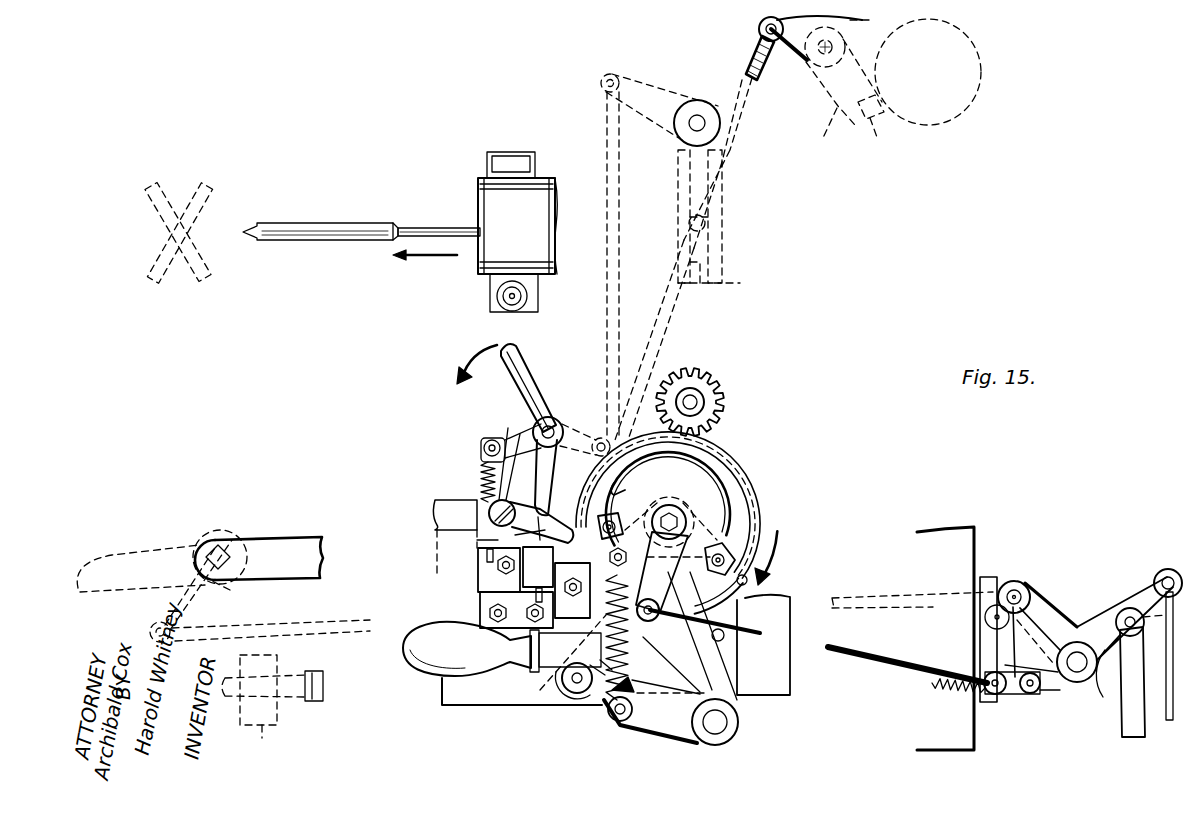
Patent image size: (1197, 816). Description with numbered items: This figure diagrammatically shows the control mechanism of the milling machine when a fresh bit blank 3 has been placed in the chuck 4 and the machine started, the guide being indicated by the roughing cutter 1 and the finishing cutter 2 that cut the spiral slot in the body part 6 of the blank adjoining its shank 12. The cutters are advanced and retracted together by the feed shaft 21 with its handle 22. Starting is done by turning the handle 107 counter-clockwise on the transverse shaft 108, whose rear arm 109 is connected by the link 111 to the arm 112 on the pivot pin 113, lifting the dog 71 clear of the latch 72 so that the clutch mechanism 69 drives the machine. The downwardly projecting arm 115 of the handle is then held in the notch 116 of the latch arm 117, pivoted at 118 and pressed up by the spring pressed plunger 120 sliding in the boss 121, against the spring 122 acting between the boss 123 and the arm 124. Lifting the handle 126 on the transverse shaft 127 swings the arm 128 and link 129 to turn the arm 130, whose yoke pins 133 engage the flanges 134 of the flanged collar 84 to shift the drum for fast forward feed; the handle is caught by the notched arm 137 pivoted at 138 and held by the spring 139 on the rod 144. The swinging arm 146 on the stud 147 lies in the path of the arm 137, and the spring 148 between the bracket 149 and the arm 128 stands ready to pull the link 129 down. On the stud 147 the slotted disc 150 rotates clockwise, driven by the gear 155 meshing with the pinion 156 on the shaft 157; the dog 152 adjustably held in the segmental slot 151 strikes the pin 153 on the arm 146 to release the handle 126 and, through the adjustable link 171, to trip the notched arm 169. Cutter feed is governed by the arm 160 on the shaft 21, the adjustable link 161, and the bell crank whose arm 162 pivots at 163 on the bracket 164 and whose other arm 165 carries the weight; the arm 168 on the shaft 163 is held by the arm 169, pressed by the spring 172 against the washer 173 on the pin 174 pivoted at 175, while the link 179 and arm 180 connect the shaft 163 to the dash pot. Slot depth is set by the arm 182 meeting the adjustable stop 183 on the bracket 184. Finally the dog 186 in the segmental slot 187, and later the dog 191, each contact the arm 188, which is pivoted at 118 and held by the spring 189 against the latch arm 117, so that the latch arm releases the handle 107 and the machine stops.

The roughing cutter 1 is at (207, 187).
The finishing cutter 2 is at (178, 219).
The bit blank 3 is at (318, 217).
The chuck 4 is at (517, 232).
The body part 6 is at (376, 222).
The shank part 12 is at (434, 225).
The feed shaft 21 is at (229, 554).
The handle 22 is at (311, 540).
The clutch mechanism 69 is at (971, 104).
The dog 71 is at (842, 126).
The latch 72 is at (882, 128).
The flanged collar 84 is at (697, 286).
The handle 107 is at (526, 381).
The transverse shaft 108 is at (554, 424).
The arm 109 is at (584, 433).
The link 111 is at (752, 60).
The arm 112 is at (790, 40).
The pivot pin 113 is at (808, 100).
The downwardly projecting arm 115 is at (549, 467).
The notch 116 is at (548, 492).
The latch arm 117 is at (516, 538).
The pivot 118 is at (489, 516).
The spring pressed plunger 120 is at (544, 603).
The boss 121 is at (535, 574).
The spring 122 is at (481, 471).
The boss 123 is at (475, 502).
The arm 124 is at (512, 434).
The handle 126 is at (504, 660).
The transverse shaft 127 is at (728, 722).
The arm 128 is at (667, 727).
The link 129 is at (620, 247).
The arm 130 is at (648, 80).
The pins 133 is at (722, 218).
The flanges 134 is at (724, 284).
The notched arm 137 is at (598, 676).
The pivot 138 is at (565, 691).
The spring 139 is at (606, 705).
The rod 144 is at (618, 712).
The swinging arm 146 is at (732, 611).
The stud 147 is at (685, 521).
The spring 148 is at (612, 606).
The bracket 149 is at (610, 592).
The slotted disc 150 is at (706, 495).
The segmental slot 151 is at (732, 529).
The dog 152 is at (737, 549).
The pin 153 is at (686, 616).
The gear 155 is at (735, 459).
The pinion 156 is at (711, 400).
The shaft 157 is at (692, 398).
The arm 160 is at (217, 591).
The adjustable link 161 is at (935, 606).
The arm 162 is at (1037, 607).
The pivot shaft 163 is at (1073, 670).
The bracket 164 is at (1050, 630).
The arm 165 is at (1138, 596).
The arm 168 is at (1050, 686).
The notched arm 169 is at (995, 634).
The adjustable link 171 is at (761, 636).
The spring 172 is at (968, 696).
The washer 173 is at (948, 692).
The pin 174 is at (935, 687).
The pivot 175 is at (1018, 696).
The link 179 is at (1130, 729).
The arm 180 is at (1110, 662).
The arm 182 is at (162, 546).
The adjustable stop 183 is at (246, 697).
The bracket 184 is at (282, 739).
The dog 186 is at (480, 594).
The segmental slot 187 is at (760, 600).
The arm 188 is at (478, 541).
The spring 189 is at (521, 464).
The dog 191 is at (604, 513).